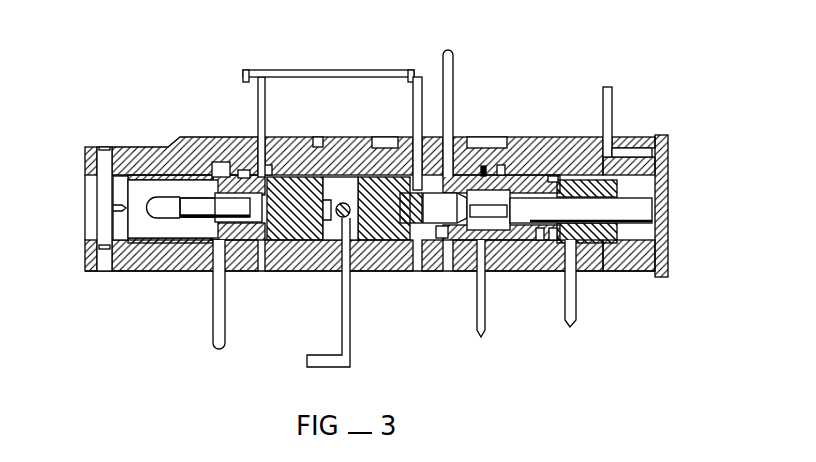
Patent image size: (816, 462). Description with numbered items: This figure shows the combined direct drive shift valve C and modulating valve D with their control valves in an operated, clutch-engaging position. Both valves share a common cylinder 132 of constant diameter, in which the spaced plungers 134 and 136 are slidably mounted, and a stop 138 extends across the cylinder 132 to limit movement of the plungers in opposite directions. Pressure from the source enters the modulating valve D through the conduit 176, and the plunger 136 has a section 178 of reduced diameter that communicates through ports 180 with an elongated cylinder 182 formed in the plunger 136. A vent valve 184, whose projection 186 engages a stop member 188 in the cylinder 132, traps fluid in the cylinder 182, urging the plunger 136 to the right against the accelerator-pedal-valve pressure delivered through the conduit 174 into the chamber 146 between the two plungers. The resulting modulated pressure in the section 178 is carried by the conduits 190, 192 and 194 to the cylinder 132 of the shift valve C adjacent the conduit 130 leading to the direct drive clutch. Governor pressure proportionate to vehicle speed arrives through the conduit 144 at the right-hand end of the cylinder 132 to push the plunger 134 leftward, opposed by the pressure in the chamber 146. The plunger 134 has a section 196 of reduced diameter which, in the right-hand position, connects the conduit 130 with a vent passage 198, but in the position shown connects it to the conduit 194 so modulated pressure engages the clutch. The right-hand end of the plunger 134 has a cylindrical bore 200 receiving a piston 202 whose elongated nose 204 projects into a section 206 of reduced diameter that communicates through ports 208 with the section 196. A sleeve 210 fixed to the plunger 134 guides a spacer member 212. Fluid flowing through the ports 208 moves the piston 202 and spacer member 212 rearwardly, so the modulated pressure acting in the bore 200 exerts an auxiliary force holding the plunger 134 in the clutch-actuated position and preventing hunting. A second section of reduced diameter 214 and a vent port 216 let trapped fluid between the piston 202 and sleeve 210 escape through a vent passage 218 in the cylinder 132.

The conduit 130 is at (453, 70).
The cylinder 132 is at (327, 175).
The plunger 134 is at (380, 267).
The plunger 136 is at (290, 267).
The stop 138 is at (340, 222).
The conduit 144 is at (610, 112).
The chamber 146 is at (355, 175).
The conduit 174 is at (352, 357).
The conduit 176 is at (224, 323).
The section of reduced diameter 178 is at (243, 177).
The ports 180 is at (267, 172).
The elongated cylinder 182 is at (192, 245).
The vent valve 184 is at (130, 245).
The projection 186 is at (117, 208).
The stop member 188 is at (67, 209).
The conduit 190 is at (265, 102).
The conduit 192 is at (358, 70).
The conduit 194 is at (416, 107).
The section of reduced diameter 196 is at (442, 267).
The vent passage 198 is at (483, 333).
The cylindrical bore 200 is at (557, 177).
The piston 202 is at (515, 267).
The elongated nose 204 is at (503, 177).
The section of reduced diameter 206 is at (483, 166).
The ports 208 is at (433, 250).
The sleeve 210 is at (652, 177).
The spacer member 212 is at (637, 212).
The second section of reduced diameter 214 is at (540, 267).
The vent port 216 is at (553, 267).
The vent passage 218 is at (577, 322).
The direct drive shift valve C is at (563, 120).
The modulating valve D is at (210, 177).